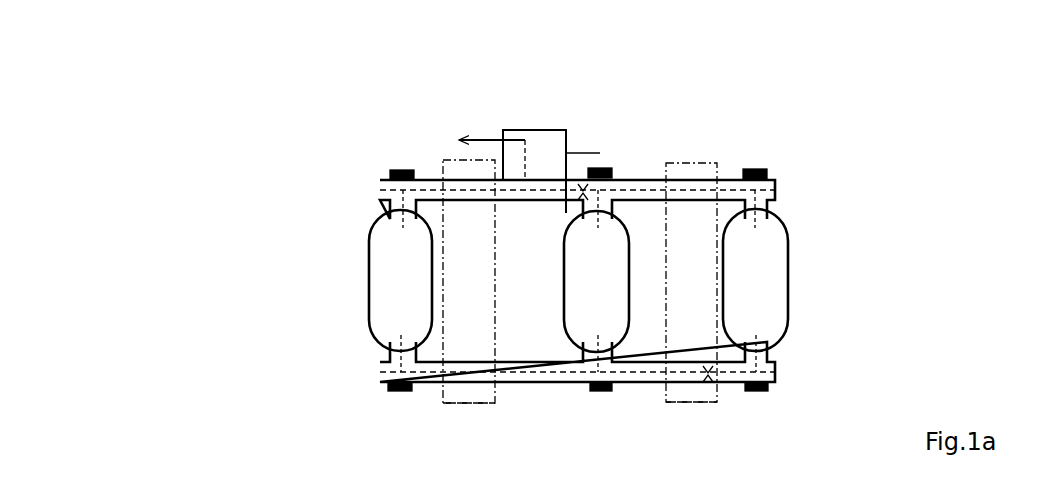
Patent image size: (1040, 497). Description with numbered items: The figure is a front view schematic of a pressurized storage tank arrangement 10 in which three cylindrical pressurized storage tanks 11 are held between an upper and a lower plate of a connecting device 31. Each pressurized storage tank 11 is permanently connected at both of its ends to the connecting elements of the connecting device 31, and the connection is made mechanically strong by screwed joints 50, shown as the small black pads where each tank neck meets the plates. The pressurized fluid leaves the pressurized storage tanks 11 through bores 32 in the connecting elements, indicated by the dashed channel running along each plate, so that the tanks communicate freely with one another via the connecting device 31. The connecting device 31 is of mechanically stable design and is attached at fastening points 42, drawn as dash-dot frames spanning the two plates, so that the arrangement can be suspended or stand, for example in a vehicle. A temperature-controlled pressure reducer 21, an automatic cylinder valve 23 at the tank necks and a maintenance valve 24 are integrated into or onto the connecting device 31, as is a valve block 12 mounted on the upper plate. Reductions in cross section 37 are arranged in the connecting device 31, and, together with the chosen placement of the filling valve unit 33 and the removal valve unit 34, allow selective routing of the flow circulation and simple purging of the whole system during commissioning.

The pressurized storage tank arrangement 10 is at (290, 380).
The pressurized storage tank 11 is at (578, 280).
The valve block 12 is at (517, 128).
The temperature-controlled pressure reducer 21 is at (710, 179).
The automatic cylinder valve 23 is at (397, 193).
The maintenance valve 24 is at (555, 188).
The connecting device 31 is at (655, 180).
The bore 32 is at (625, 190).
The filling valve unit 33 is at (778, 373).
The removal valve unit 34 is at (475, 128).
The reduction in cross section 37 is at (583, 184).
The fastening point 42 is at (483, 401).
The screwed joint 50 is at (402, 178).